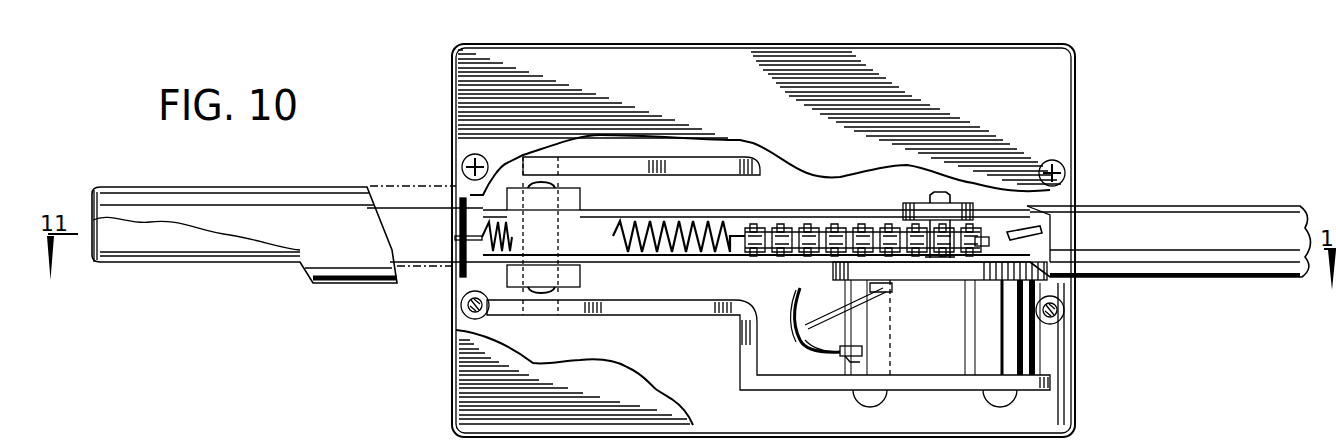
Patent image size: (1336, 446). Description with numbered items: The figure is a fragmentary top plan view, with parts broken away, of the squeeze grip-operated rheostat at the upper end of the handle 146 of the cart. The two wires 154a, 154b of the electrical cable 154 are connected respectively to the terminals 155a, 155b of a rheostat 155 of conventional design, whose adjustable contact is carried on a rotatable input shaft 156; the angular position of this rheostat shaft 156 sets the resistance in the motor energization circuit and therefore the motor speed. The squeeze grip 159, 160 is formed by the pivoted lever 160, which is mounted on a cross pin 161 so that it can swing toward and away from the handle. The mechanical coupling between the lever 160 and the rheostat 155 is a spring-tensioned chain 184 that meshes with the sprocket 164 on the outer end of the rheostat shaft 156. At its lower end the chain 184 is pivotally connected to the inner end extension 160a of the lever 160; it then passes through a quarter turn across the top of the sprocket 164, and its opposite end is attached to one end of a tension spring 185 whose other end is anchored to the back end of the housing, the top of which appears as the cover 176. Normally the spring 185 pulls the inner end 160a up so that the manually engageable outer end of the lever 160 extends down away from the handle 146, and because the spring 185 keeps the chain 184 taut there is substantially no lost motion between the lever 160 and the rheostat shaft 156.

The handle 146 is at (1192, 210).
The electrical cable 154 is at (1022, 228).
The wire 154a is at (820, 320).
The wire 154b is at (832, 300).
The rheostat 155 is at (1035, 338).
The terminal 155a is at (860, 349).
The terminal 155b is at (882, 290).
The rheostat shaft 156 is at (935, 195).
The squeeze grip 159 is at (348, 285).
The lever 160 is at (157, 245).
The inner end extension of lever 160a is at (600, 262).
The cross pin 161 is at (540, 188).
The sprocket 164 is at (982, 241).
The housing 176 is at (778, 52).
The chain 184 is at (805, 228).
The tension spring 185 is at (665, 225).